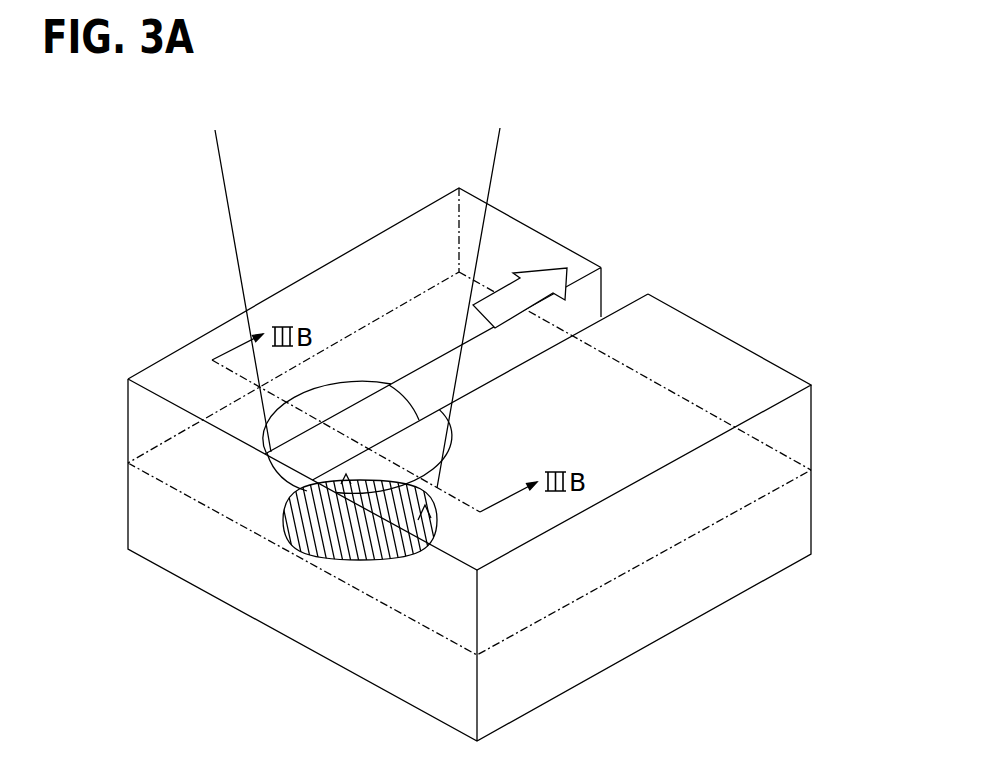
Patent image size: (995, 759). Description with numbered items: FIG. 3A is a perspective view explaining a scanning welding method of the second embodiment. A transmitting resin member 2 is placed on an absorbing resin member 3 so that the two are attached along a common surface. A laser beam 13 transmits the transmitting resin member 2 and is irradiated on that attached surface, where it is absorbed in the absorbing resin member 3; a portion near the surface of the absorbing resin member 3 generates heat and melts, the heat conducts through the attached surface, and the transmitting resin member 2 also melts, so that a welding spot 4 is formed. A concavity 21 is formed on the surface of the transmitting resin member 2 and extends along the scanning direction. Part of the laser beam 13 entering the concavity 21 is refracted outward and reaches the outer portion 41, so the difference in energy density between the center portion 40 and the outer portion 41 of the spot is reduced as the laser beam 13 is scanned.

The transmitting resin member 2 is at (168, 362).
The absorbing resin member 3 is at (155, 517).
The welding spot 4 is at (320, 565).
The laser beam 13 is at (238, 268).
The concavity 21 is at (630, 305).
The center portion 40 is at (376, 452).
The outer portion 41 is at (290, 488).